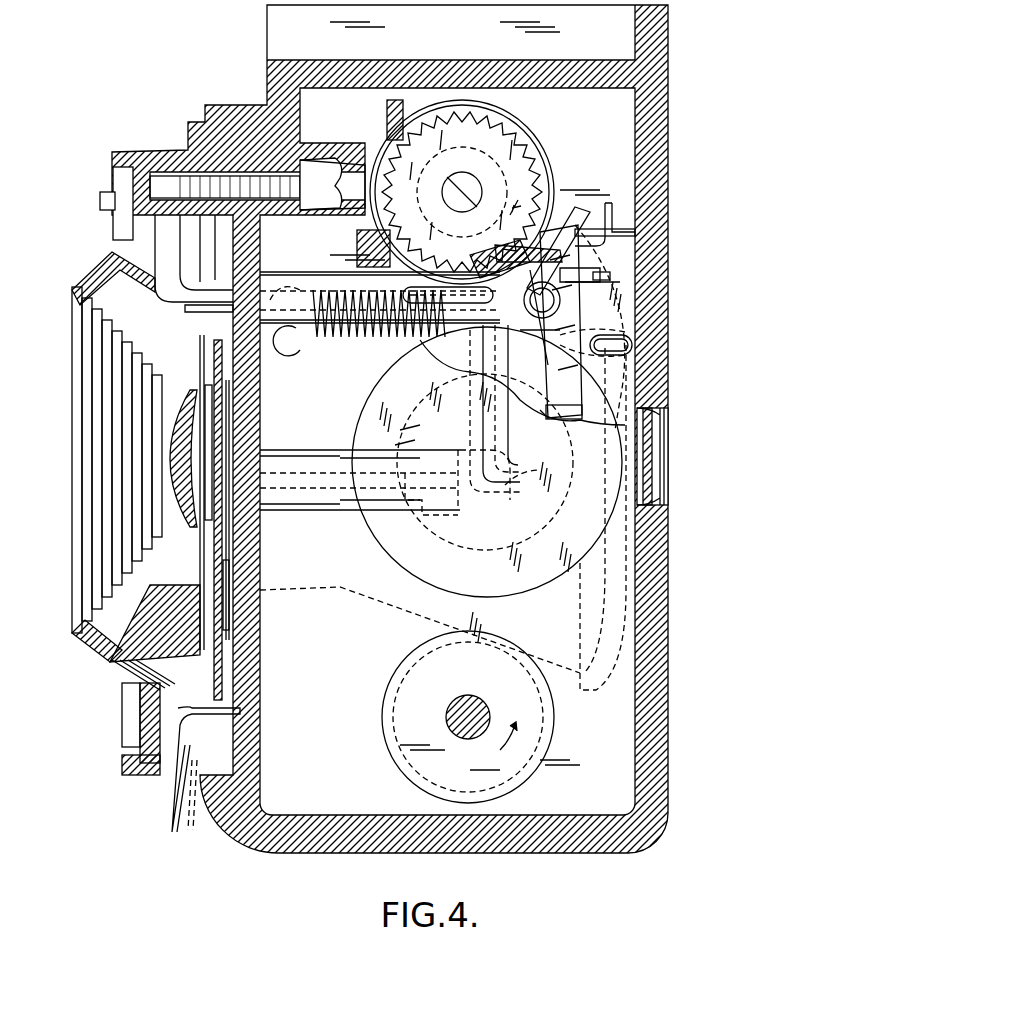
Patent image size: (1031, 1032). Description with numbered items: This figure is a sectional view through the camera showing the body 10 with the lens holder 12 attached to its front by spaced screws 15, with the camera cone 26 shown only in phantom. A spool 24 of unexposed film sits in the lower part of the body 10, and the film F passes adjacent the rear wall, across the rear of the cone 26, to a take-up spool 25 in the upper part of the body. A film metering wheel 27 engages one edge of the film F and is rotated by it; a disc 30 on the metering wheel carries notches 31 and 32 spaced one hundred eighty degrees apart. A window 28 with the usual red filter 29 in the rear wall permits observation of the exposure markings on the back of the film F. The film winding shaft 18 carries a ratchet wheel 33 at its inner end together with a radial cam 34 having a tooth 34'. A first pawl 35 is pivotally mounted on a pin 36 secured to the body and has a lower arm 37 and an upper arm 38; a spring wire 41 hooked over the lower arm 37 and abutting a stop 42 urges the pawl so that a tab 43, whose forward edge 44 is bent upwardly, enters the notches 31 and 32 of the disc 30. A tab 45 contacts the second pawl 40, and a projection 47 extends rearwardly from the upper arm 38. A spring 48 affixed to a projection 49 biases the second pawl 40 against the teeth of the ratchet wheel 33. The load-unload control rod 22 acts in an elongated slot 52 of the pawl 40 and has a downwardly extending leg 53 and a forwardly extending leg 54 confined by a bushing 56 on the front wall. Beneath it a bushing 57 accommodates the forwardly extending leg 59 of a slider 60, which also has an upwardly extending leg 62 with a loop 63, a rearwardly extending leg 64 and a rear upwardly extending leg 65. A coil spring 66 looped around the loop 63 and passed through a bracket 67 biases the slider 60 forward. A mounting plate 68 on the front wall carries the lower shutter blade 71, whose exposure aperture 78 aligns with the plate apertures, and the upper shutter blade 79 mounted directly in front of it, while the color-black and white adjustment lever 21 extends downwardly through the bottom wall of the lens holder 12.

The body 10 is at (268, 856).
The lens holder 12 is at (95, 663).
The screws 15 is at (306, 168).
The film winding shaft 18 is at (455, 176).
The color-black and white adjustment lever 21 is at (170, 815).
The load-unload control rod 22 is at (98, 203).
The spool of unexposed film 24 is at (405, 748).
The take-up spool 25 is at (518, 136).
The camera cone 26 is at (350, 585).
The film metering wheel 27 is at (538, 578).
The window 28 is at (661, 442).
The red filter 29 is at (650, 475).
The disc 30 is at (460, 382).
The notch 31 is at (560, 410).
The notch 32 is at (418, 505).
The ratchet wheel 33 is at (428, 150).
The radial cam 34 is at (498, 182).
The tooth 34' is at (491, 218).
The first pawl 35 is at (500, 351).
The pin 36 is at (556, 302).
The lower arm 37 is at (548, 368).
The upper arm 38 is at (570, 275).
The second pawl 40 is at (552, 342).
The spring wire 41 is at (605, 282).
The stop 42 is at (612, 277).
The tab 43 is at (580, 408).
The forward edge 44 is at (540, 412).
The tab 45 is at (540, 273).
The projection 47 is at (636, 232).
The spring 48 is at (580, 333).
The projection 49 is at (622, 345).
The elongated slot 52 is at (480, 268).
The downwardly extending leg 53 is at (175, 250).
The forwardly extending leg 54 is at (283, 292).
The bushing 56 is at (332, 286).
The bushing 57 is at (350, 505).
The forwardly extending leg 59 is at (328, 478).
The slider 60 is at (506, 488).
The upwardly extending leg 62 is at (500, 412).
The loop 63 is at (465, 337).
The rearwardly extending leg 64 is at (540, 230).
The upwardly extending leg 65 is at (605, 208).
The coil spring 66 is at (360, 333).
The bracket 67 is at (296, 338).
The mounting plate 68 is at (230, 572).
The lower shutter blade 71 is at (205, 468).
The exposure aperture 78 is at (224, 456).
The upper shutter blade 79 is at (216, 500).
The film F is at (560, 677).